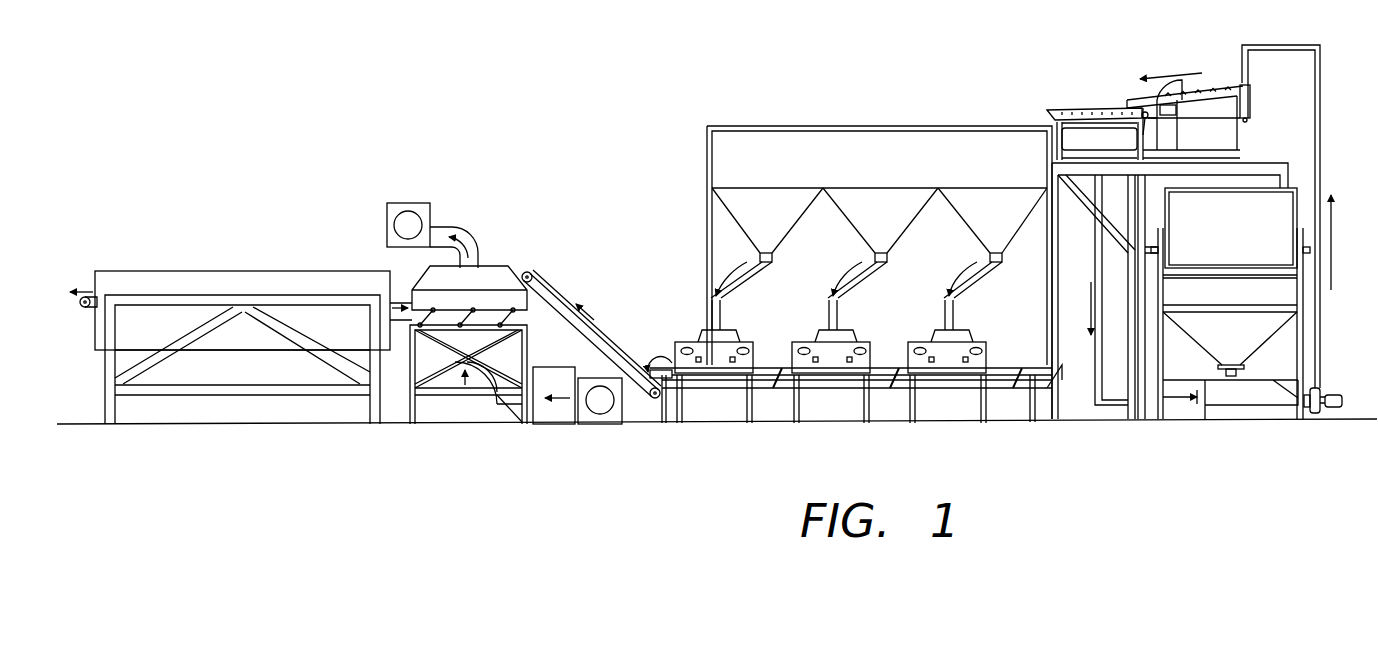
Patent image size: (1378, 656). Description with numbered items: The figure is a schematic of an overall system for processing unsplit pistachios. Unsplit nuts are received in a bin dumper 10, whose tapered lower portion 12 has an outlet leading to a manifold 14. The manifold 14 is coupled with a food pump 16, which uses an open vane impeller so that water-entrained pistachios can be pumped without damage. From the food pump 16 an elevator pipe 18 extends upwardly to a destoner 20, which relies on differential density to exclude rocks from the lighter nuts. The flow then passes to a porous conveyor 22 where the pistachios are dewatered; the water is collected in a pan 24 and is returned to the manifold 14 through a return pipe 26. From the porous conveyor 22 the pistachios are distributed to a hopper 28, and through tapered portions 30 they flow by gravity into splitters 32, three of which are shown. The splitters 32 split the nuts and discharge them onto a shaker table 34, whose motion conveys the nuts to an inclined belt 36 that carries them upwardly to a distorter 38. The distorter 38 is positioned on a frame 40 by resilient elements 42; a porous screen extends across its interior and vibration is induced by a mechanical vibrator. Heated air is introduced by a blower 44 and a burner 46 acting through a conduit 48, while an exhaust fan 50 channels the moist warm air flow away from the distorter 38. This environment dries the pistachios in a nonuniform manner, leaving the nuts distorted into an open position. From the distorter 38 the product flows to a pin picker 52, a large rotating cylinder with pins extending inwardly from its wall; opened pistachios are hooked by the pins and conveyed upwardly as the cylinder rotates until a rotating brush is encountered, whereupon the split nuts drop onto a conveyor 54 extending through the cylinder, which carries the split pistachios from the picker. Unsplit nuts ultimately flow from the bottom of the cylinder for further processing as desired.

The bin dumper 10 is at (1230, 303).
The tapered lower portion 12 is at (1230, 344).
The manifold 14 is at (1257, 397).
The food pump 16 is at (1313, 419).
The elevator pipe 18 is at (1322, 125).
The destoner 20 is at (1215, 86).
The porous conveyor 22 is at (1085, 108).
The pan 24 is at (1062, 140).
The return pipe 26 is at (1113, 405).
The hopper 28 is at (847, 126).
The tapered portions 30 is at (732, 228).
The splitters 32 is at (992, 343).
The shaker table 34 is at (887, 365).
The inclined belt 36 is at (602, 338).
The distorter 38 is at (490, 266).
The frame 40 is at (407, 410).
The resilient elements 42 is at (512, 315).
The blower 44 is at (605, 422).
The burner 46 is at (557, 412).
The conduit 48 is at (473, 403).
The exhaust fan 50 is at (407, 203).
The pin picker 52 is at (183, 271).
The conveyor 54 is at (85, 312).